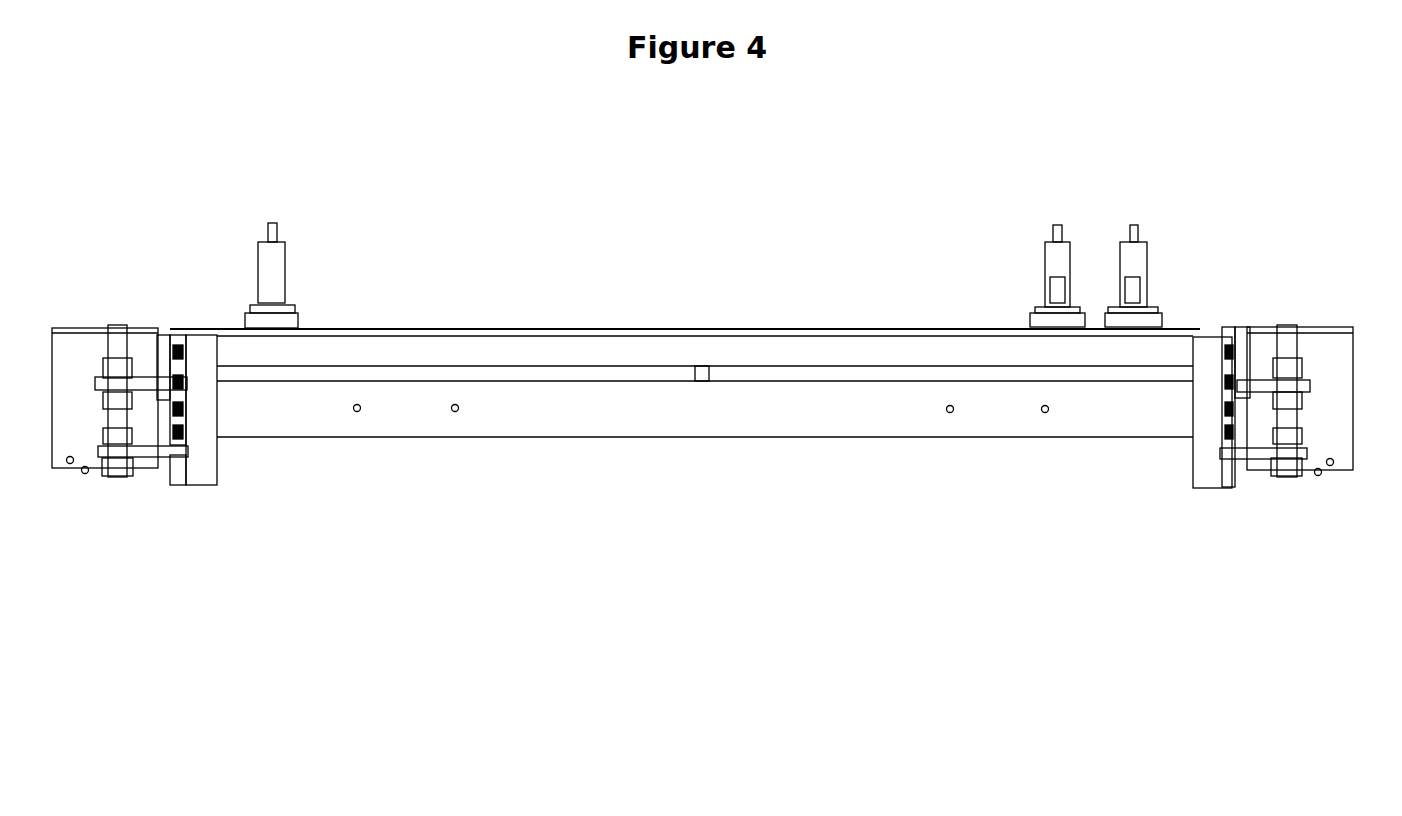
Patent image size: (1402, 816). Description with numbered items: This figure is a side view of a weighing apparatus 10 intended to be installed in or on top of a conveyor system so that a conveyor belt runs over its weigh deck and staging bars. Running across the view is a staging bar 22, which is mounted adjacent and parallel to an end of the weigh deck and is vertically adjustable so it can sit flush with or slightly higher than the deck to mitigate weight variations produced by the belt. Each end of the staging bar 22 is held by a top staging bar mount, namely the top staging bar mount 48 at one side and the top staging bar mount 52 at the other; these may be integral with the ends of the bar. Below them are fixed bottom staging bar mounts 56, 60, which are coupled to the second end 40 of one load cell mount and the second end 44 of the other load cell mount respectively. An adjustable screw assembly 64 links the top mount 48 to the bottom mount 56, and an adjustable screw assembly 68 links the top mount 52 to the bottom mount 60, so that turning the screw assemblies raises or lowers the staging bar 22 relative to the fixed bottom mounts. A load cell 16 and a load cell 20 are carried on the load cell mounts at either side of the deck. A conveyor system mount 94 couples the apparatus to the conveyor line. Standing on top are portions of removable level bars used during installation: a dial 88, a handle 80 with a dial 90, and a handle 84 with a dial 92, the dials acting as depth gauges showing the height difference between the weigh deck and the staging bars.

The weighing apparatus 10 is at (845, 187).
The load cell 16 is at (76, 338).
The load cell 20 is at (1327, 338).
The staging bar 22 is at (380, 340).
The second end of load cell mount 40 is at (212, 463).
The second end of load cell mount 44 is at (1200, 478).
The top staging bar mount 48 is at (178, 343).
The top staging bar mount 52 is at (1240, 333).
The bottom staging bar mount 56 is at (155, 455).
The bottom staging bar mount 60 is at (1290, 457).
The adjustable screw assembly 64 is at (108, 402).
The adjustable screw assembly 68 is at (1297, 400).
The handle 80 is at (1054, 300).
The handle 84 is at (1137, 300).
The dial 88 is at (283, 246).
The dial 90 is at (1050, 250).
The dial 92 is at (1143, 252).
The conveyor system mount 94 is at (573, 428).